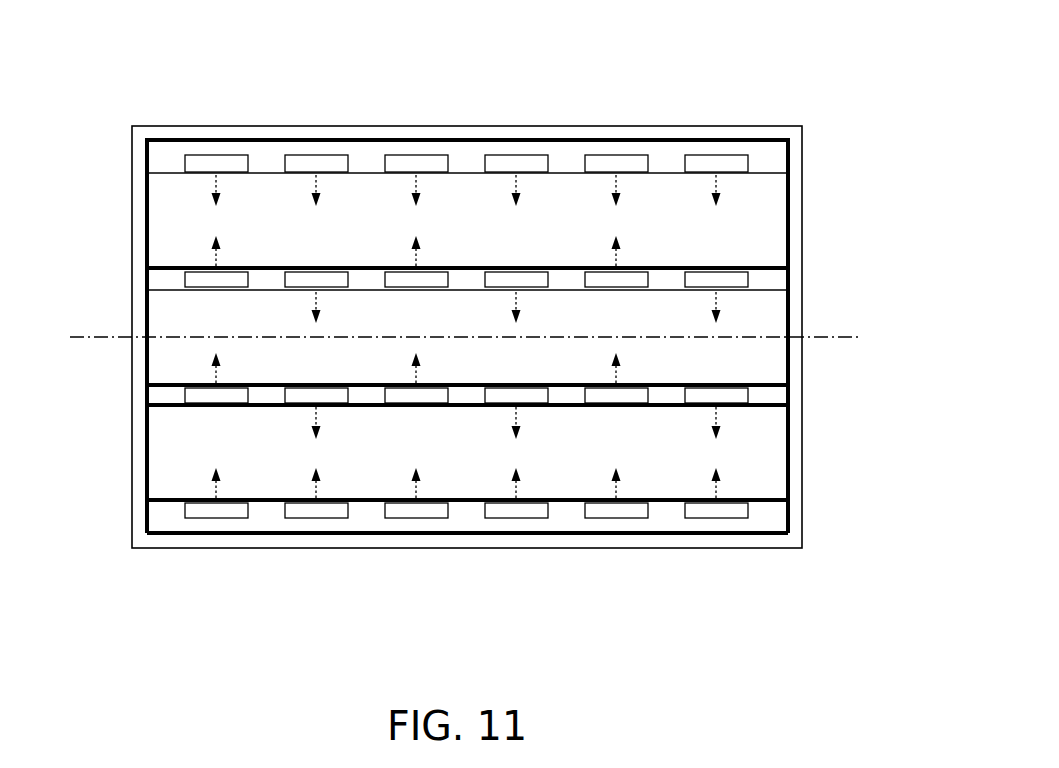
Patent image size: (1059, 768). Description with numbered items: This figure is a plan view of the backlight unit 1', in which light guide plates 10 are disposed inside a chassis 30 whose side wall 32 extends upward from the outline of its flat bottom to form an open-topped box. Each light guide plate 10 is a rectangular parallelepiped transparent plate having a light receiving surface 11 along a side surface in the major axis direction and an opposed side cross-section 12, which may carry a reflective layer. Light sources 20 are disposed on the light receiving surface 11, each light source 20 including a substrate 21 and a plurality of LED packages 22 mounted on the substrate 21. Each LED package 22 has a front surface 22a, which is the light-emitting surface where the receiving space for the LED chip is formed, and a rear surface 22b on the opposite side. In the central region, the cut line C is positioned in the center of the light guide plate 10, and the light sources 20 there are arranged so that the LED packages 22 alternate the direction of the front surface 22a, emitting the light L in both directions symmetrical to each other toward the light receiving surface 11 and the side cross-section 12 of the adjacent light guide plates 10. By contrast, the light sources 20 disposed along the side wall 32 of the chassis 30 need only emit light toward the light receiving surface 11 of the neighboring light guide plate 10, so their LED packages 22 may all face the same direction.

The backlight unit 1' is at (460, 360).
The light guide plate 10 is at (772, 235).
The light receiving surface 11 is at (764, 173).
The side cross-section 12 is at (765, 269).
The light source 20 is at (467, 377).
The substrate 21 is at (366, 535).
The LED package 22 is at (466, 352).
The front surface 22a is at (312, 174).
The rear surface 22b is at (318, 155).
The chassis 30 is at (188, 552).
The side wall 32 is at (748, 531).
The light L is at (215, 181).
The cut line C is at (112, 336).